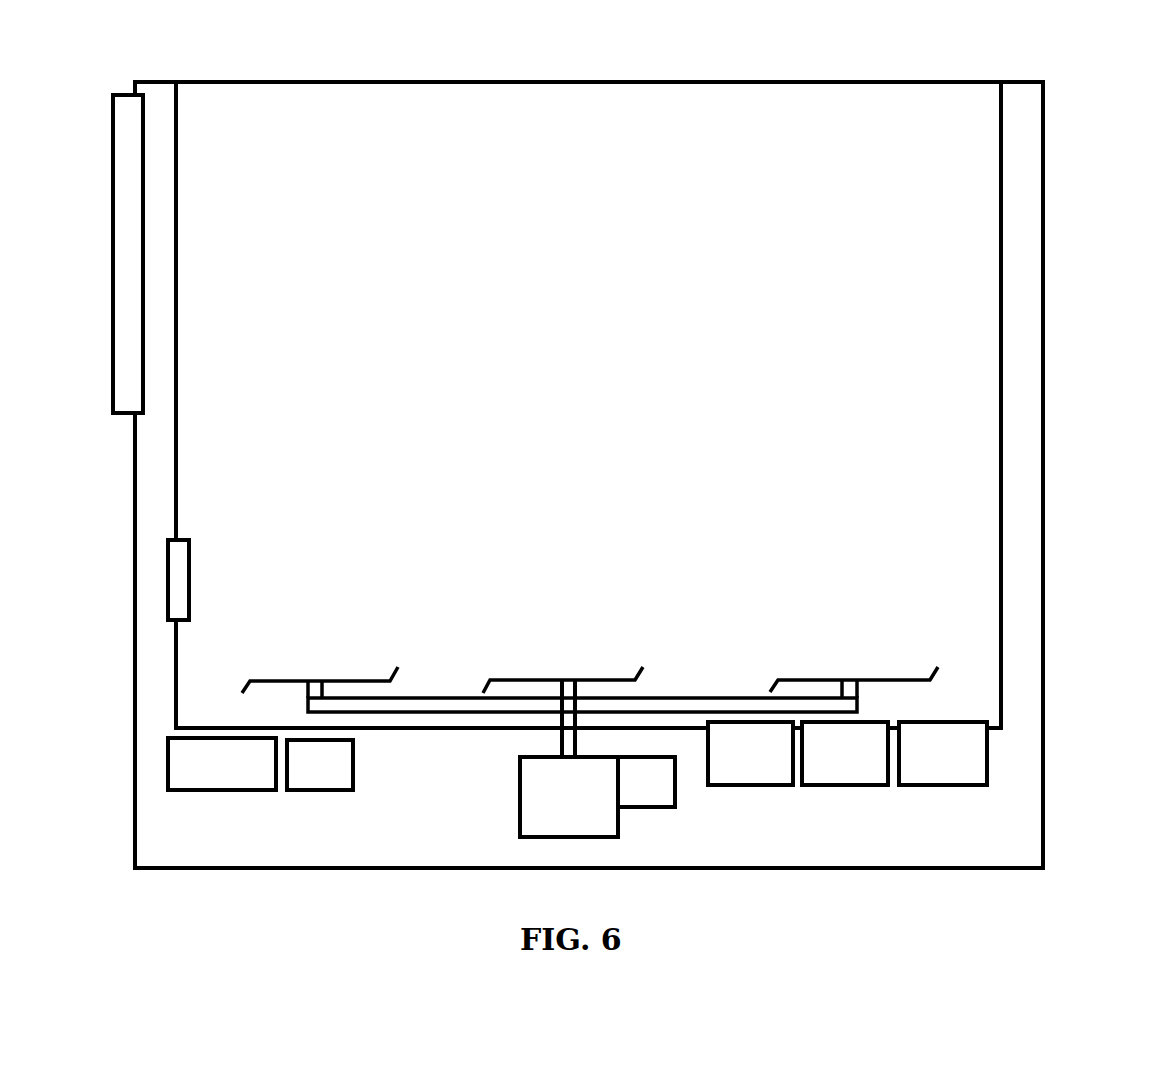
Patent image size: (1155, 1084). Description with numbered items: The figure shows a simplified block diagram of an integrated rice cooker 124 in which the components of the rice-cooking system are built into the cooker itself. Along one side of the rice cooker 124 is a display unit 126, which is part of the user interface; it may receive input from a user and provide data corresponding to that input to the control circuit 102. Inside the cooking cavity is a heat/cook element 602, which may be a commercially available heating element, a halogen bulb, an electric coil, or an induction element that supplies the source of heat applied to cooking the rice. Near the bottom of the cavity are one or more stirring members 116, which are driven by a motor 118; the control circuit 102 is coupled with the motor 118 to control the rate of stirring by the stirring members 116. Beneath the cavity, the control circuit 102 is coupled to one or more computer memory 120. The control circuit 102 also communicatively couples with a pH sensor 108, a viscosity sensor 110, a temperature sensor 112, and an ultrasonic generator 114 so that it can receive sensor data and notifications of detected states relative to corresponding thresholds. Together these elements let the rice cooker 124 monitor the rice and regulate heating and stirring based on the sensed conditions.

The rice cooker 124 is at (1087, 120).
The display unit 126 is at (113, 205).
The heat/cook element 602 is at (323, 563).
The stirring members 116 is at (355, 680).
The motor 118 is at (545, 792).
The viscosity sensor 110 is at (625, 789).
The ultrasonic generator 114 is at (728, 771).
The pH sensor 108 is at (822, 771).
The temperature sensor 112 is at (919, 771).
The control circuit 102 is at (197, 772).
The computer memory 120 is at (296, 774).